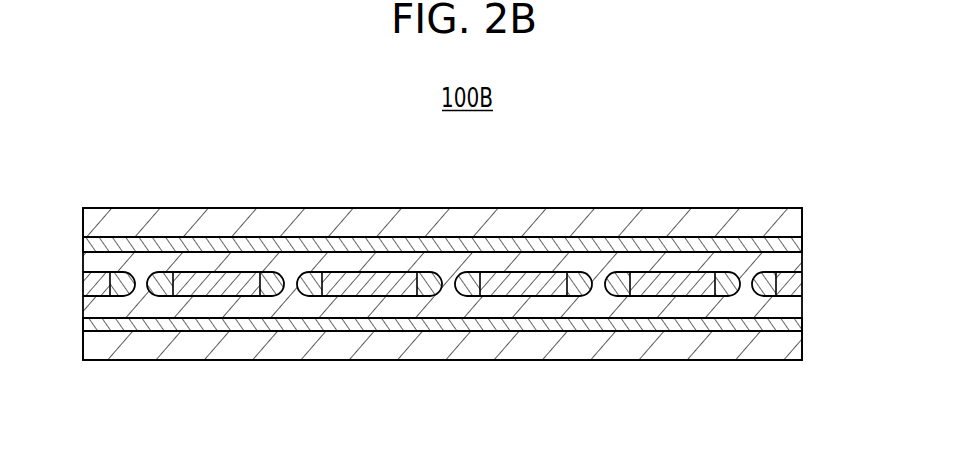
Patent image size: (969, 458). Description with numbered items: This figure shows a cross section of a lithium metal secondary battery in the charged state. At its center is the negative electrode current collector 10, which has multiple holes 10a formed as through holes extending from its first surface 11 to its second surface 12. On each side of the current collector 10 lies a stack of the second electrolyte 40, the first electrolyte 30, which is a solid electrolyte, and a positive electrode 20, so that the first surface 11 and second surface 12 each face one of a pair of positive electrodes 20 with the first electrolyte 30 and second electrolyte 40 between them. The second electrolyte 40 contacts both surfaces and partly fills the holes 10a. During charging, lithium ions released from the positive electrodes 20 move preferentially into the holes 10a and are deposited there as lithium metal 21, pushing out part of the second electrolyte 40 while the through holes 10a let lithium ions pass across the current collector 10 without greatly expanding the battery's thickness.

The negative electrode current collector 10 is at (795, 288).
The holes 10a is at (140, 280).
The first surface 11 is at (218, 314).
The second surface 12 is at (223, 256).
The positive electrode 20 is at (790, 348).
The lithium metal 21 is at (122, 277).
The first electrolyte 30 is at (785, 323).
The second electrolyte 40 is at (790, 312).